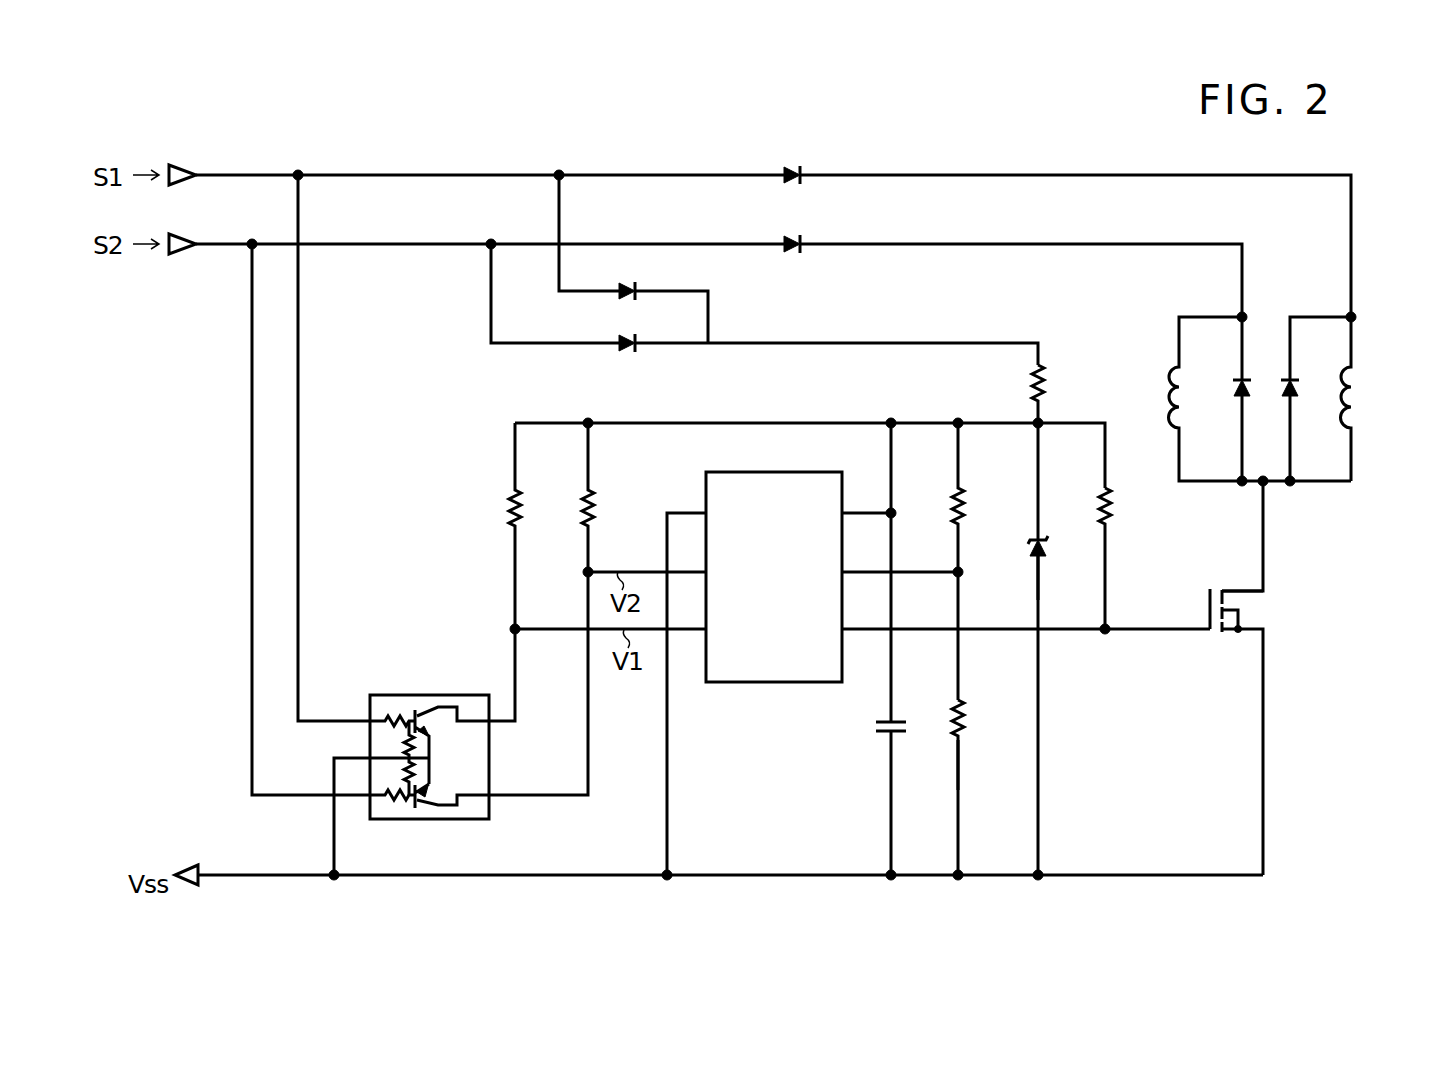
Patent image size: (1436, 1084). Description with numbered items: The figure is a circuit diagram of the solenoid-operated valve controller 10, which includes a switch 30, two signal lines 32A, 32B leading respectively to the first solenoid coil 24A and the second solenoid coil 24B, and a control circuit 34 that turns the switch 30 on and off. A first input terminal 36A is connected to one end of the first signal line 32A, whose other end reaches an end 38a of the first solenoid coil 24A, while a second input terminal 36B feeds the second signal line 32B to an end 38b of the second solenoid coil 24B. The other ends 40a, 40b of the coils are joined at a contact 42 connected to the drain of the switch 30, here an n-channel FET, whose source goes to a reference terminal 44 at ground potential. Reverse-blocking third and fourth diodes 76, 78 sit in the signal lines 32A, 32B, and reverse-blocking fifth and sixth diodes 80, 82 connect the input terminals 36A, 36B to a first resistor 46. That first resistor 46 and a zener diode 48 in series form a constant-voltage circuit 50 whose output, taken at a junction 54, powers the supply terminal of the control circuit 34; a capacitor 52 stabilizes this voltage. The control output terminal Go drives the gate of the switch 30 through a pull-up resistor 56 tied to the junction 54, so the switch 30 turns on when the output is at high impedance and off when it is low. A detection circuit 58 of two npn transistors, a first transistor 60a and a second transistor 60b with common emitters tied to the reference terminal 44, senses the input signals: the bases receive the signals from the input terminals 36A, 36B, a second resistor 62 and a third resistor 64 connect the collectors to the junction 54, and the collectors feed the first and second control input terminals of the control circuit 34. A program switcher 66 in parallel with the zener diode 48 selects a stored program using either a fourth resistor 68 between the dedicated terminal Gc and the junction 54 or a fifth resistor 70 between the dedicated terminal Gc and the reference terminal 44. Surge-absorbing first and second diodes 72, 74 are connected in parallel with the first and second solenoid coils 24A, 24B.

The solenoid-operated valve controller 10 is at (458, 112).
The first input terminal 36A is at (185, 163).
The second input terminal 36B is at (182, 256).
The first signal line 32A is at (1098, 166).
The second signal line 32B is at (1070, 248).
The third diode 76 is at (791, 162).
The fourth diode 78 is at (793, 256).
The fifth diode 80 is at (632, 278).
The sixth diode 82 is at (622, 352).
The end of first solenoid coil 38a is at (1356, 317).
The end of second solenoid coil 38b is at (1244, 316).
The first solenoid coil 24A is at (1360, 394).
The second solenoid coil 24B is at (1155, 384).
The first diode 72 is at (1306, 384).
The second diode 74 is at (1220, 386).
The contact 42 is at (1264, 477).
The other end of first solenoid coil 40a is at (1290, 486).
The other end of second solenoid coil 40b is at (1240, 486).
The first resistor 46 is at (1048, 383).
The junction 54 is at (1034, 420).
The zener diode 48 is at (1018, 548).
The constant-voltage circuit 50 is at (1050, 578).
The pull-up resistor 56 is at (1113, 512).
The fourth resistor 68 is at (942, 508).
The fifth resistor 70 is at (946, 714).
The program switcher 66 is at (968, 730).
The capacitor 52 is at (874, 726).
The control circuit 34 is at (789, 472).
The second resistor 62 is at (509, 510).
The third resistor 64 is at (590, 506).
The detection circuit 58 is at (370, 543).
The first transistor 60a is at (422, 708).
The second transistor 60b is at (424, 812).
The reference terminal 44 is at (182, 864).
The switch 30 is at (1276, 602).